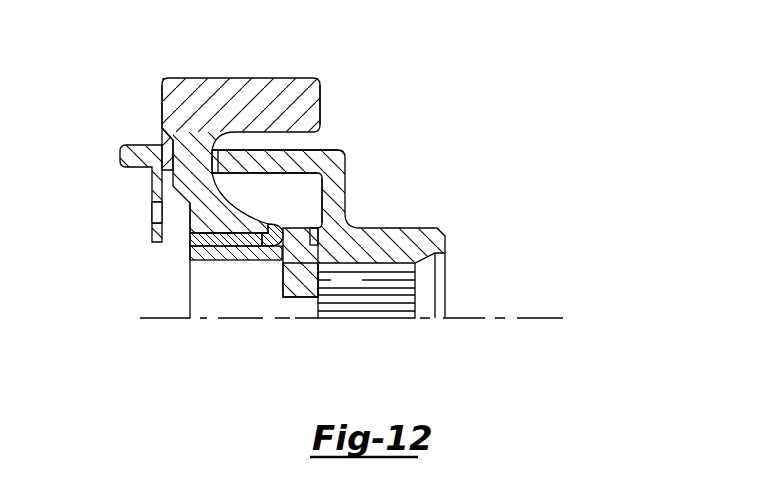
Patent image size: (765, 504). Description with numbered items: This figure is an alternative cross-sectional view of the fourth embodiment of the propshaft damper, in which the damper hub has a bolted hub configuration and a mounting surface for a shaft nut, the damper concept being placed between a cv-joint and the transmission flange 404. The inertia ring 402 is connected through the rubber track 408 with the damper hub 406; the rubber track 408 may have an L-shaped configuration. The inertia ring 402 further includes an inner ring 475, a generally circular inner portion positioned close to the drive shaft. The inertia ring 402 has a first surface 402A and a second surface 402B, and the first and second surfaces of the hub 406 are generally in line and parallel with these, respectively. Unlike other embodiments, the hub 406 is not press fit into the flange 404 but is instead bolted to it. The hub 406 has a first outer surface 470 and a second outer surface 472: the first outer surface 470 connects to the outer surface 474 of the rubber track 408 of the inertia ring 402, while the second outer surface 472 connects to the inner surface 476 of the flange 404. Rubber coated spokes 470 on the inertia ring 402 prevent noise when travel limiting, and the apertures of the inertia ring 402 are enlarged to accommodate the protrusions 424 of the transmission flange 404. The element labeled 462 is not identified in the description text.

The inertia ring 402 is at (245, 80).
The first surface of inertia ring 402A is at (161, 107).
The second surface of inertia ring 402B is at (322, 103).
The transmission flange 404 is at (358, 230).
The damper hub 406 is at (298, 265).
The rubber track 408 is at (193, 240).
The protrusions of transmission flange 424 is at (262, 164).
The threaded insert 462 is at (387, 305).
The first outer surface of hub 470 is at (188, 168).
The second outer surface of hub 472 is at (315, 240).
The outer surface of rubber track 474 is at (260, 250).
The inner ring 475 is at (203, 225).
The inner surface of flange 476 is at (366, 290).